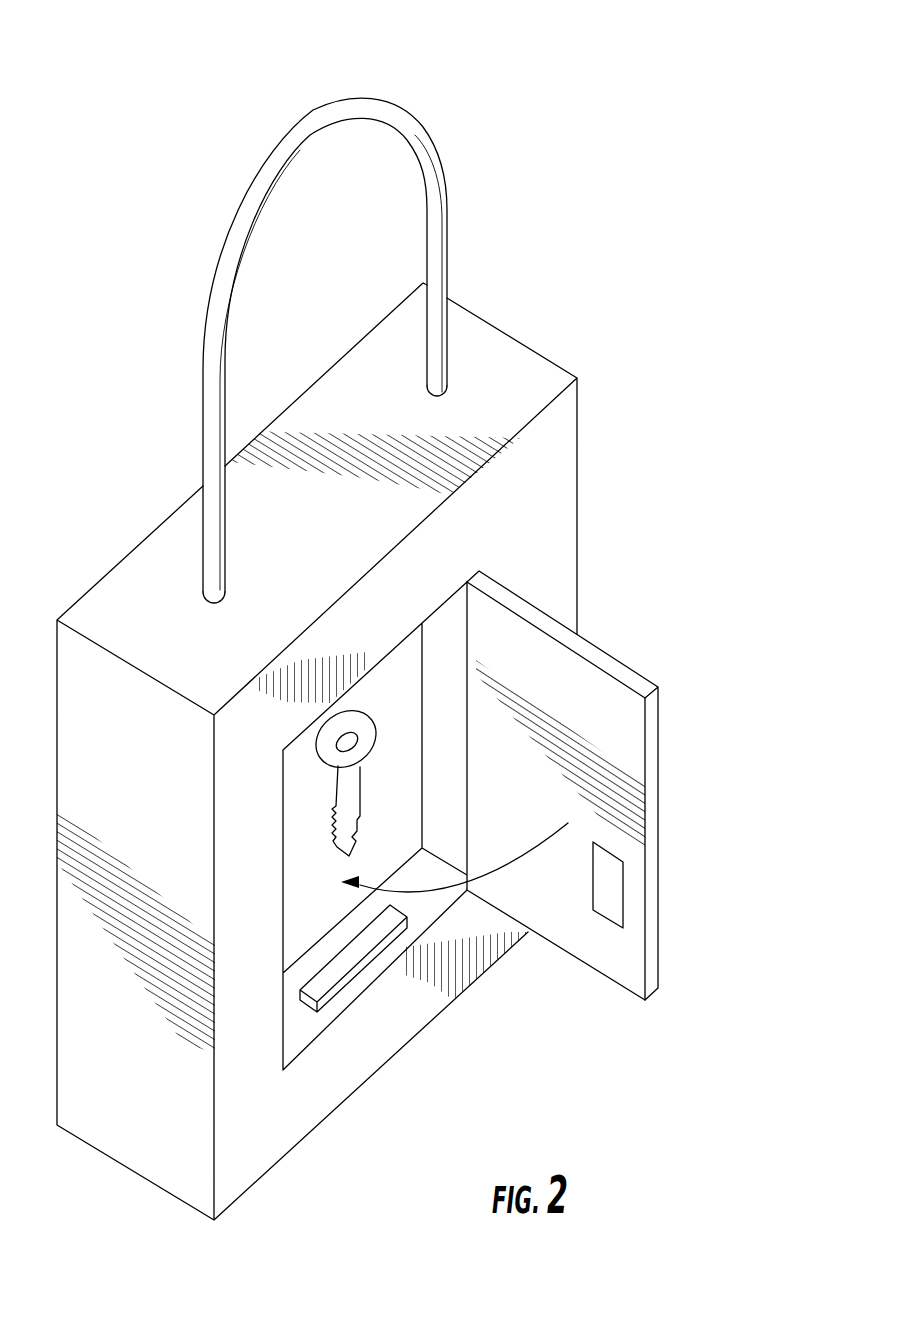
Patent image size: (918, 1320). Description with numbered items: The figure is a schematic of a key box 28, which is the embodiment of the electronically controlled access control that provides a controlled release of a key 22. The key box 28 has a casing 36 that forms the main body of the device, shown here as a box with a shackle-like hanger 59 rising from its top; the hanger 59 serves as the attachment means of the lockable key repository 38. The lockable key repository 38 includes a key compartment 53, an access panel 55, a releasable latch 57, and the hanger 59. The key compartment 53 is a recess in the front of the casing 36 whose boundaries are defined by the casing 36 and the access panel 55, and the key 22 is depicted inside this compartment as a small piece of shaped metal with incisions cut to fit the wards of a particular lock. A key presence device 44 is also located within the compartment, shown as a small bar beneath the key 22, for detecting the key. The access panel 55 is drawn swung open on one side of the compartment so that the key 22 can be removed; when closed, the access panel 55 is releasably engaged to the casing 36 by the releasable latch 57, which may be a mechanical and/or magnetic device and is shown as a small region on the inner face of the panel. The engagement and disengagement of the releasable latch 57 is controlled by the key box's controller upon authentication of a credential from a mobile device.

The key 22 is at (358, 753).
The key box 28 is at (400, 612).
The casing 36 is at (549, 440).
The lockable key repository 38 is at (542, 771).
The key presence device 44 is at (348, 955).
The key compartment 53 is at (440, 658).
The access panel 55 is at (652, 848).
The releasable latch 57 is at (607, 913).
The hanger 59 is at (362, 106).